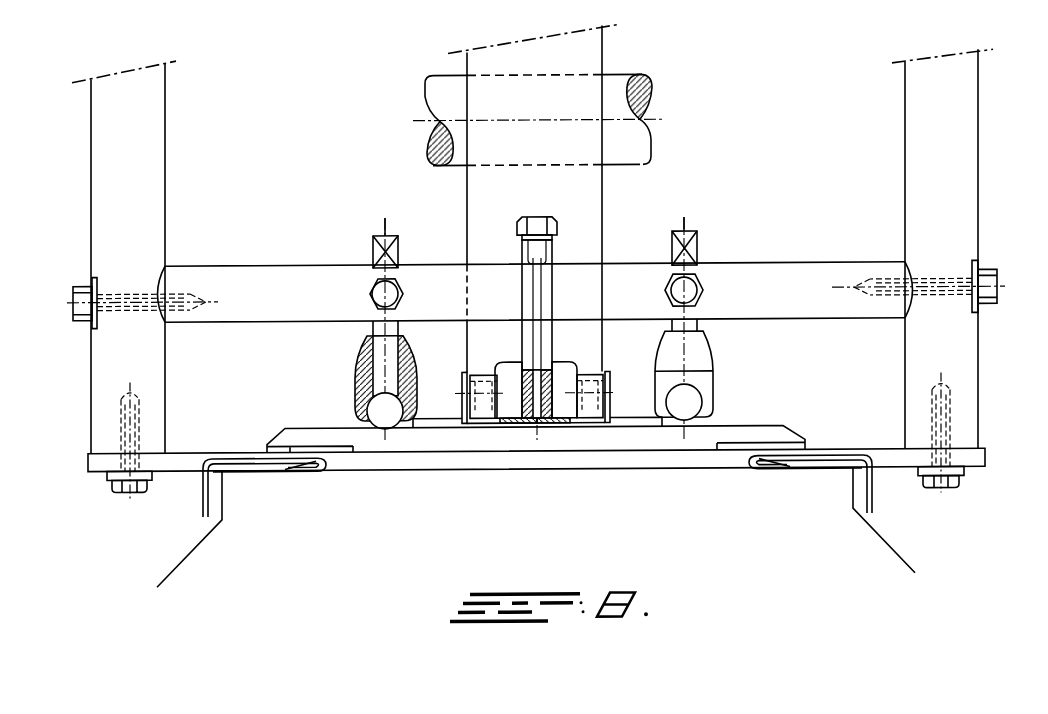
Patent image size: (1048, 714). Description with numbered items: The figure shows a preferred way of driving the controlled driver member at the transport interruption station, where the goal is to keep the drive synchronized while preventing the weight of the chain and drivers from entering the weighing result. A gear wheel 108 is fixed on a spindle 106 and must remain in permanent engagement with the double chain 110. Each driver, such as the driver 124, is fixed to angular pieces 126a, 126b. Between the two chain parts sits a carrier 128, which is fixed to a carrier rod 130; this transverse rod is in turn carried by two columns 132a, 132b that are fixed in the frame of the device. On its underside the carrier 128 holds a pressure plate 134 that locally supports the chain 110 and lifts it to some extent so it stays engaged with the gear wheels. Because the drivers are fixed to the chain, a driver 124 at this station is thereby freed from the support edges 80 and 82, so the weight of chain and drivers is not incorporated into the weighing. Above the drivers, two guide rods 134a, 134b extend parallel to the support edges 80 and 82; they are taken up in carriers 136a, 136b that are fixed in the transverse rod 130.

The support edge 80 is at (848, 450).
The support edge 82 is at (240, 457).
The spindle 106 is at (613, 82).
The gear wheel 108 is at (594, 201).
The double chain 110 is at (483, 410).
The driver 124 is at (677, 442).
The angular piece 126a is at (627, 424).
The angular piece 126b is at (430, 424).
The carrier 128 is at (523, 307).
The carrier rod 130 is at (793, 268).
The column 132a is at (968, 208).
The column 132b is at (152, 177).
The pressure plate 134 is at (575, 419).
The guide rod 134a is at (697, 400).
The guide rod 134b is at (363, 415).
The carrier 136a is at (702, 355).
The carrier 136b is at (362, 368).